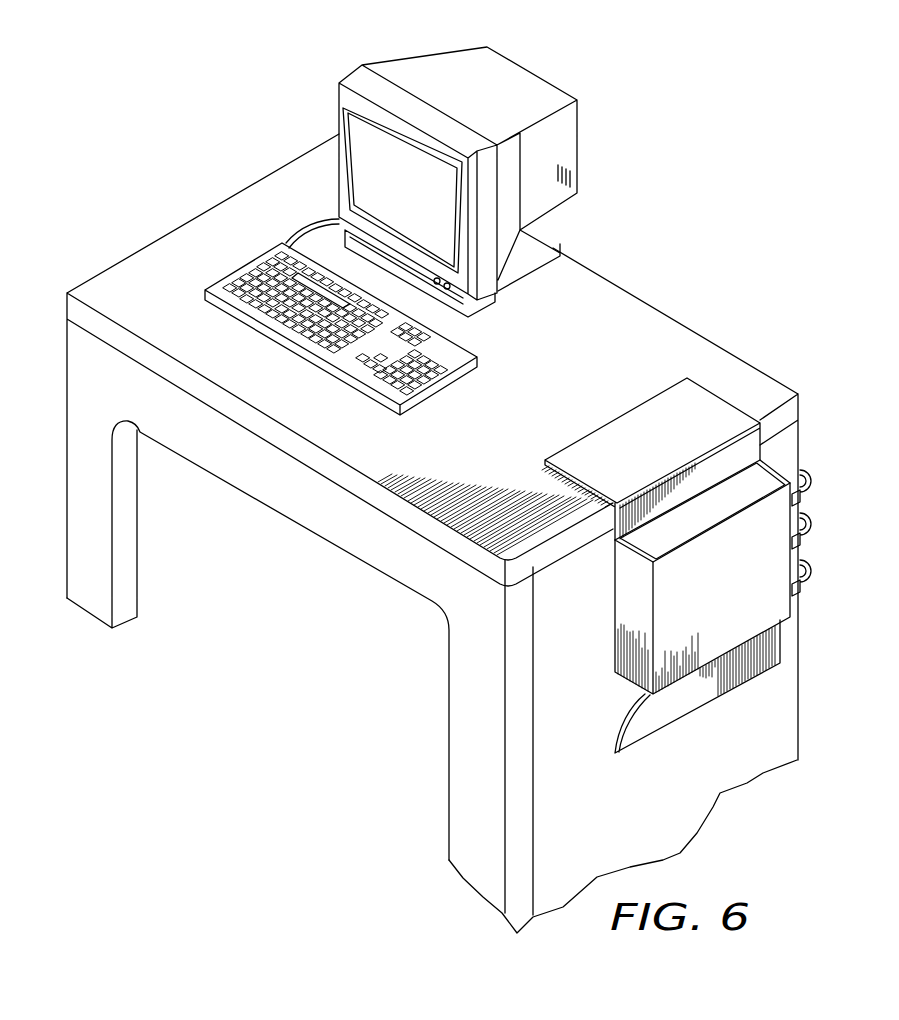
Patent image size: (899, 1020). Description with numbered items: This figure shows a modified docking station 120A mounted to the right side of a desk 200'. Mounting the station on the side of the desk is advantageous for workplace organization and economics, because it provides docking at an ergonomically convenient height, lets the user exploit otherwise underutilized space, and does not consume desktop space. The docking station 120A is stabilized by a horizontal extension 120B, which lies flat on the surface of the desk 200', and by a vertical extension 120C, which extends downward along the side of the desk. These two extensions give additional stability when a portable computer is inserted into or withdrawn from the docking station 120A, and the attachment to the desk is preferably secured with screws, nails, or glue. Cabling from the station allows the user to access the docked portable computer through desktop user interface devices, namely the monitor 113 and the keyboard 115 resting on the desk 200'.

The monitor 113 is at (340, 81).
The keyboard 115 is at (258, 254).
The desk 200' is at (432, 533).
The docking station 120A is at (790, 606).
The horizontal extension 120B is at (580, 452).
The vertical extension 120C is at (690, 700).